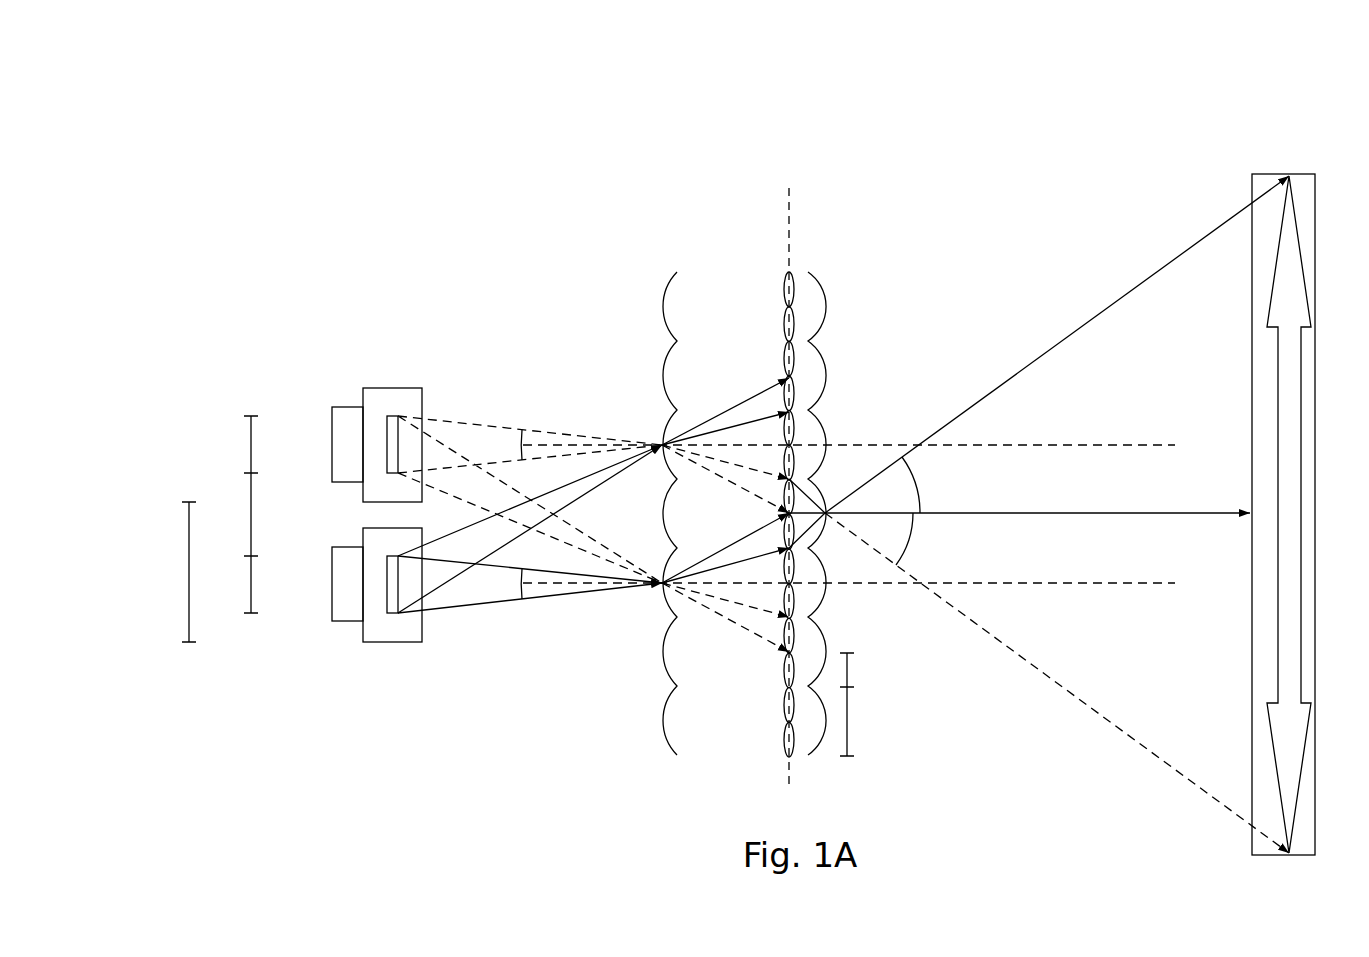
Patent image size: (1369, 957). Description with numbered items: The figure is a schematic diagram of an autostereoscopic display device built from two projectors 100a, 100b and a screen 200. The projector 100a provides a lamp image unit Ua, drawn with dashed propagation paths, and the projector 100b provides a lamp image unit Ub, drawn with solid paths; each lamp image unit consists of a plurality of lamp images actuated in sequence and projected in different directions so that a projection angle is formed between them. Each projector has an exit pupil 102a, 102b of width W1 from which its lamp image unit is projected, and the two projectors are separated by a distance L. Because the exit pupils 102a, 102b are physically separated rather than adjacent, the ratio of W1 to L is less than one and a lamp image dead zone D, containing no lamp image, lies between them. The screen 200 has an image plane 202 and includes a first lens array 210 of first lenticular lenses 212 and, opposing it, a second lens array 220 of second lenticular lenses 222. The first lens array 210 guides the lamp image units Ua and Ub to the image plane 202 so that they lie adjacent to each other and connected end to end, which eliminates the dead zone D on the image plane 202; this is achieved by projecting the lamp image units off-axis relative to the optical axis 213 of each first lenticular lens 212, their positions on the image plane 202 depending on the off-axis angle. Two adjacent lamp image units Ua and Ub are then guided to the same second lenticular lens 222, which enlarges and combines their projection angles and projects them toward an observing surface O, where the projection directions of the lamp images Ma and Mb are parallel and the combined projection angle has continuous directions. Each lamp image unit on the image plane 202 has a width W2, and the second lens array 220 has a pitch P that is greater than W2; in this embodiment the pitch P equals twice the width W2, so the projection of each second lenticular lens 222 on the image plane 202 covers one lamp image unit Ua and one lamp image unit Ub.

The projector 100a is at (347, 470).
The projector 100b is at (347, 560).
The exit pupil 102a is at (392, 416).
The exit pupil 102b is at (392, 613).
The screen 200 is at (679, 63).
The first lens array 210 is at (639, 120).
The first lenticular lens 212 is at (663, 306).
The second lens array 220 is at (832, 120).
The second lenticular lens 222 is at (826, 308).
The image plane 202 is at (792, 238).
The optical axis 213 is at (870, 442).
The observing surface O is at (1286, 150).
The lamp image Ma is at (1051, 518).
The lamp image Mb is at (1071, 510).
The lamp image unit Ua is at (462, 417).
The lamp image unit Ub is at (462, 614).
The width of exit pupil W1 is at (235, 514).
The width of lamp image unit W2 is at (865, 704).
The lamp image dead zone D is at (228, 513).
The distance between projectors L is at (182, 572).
The pitch P is at (870, 722).